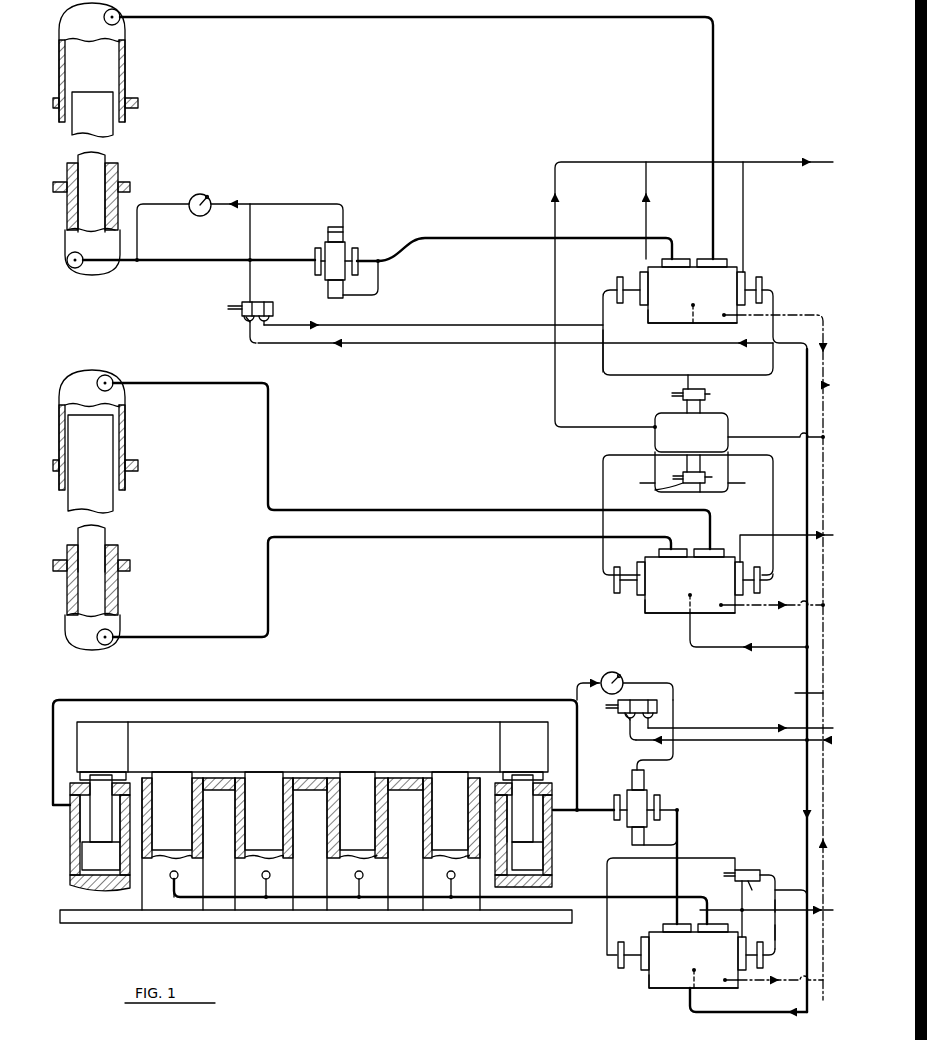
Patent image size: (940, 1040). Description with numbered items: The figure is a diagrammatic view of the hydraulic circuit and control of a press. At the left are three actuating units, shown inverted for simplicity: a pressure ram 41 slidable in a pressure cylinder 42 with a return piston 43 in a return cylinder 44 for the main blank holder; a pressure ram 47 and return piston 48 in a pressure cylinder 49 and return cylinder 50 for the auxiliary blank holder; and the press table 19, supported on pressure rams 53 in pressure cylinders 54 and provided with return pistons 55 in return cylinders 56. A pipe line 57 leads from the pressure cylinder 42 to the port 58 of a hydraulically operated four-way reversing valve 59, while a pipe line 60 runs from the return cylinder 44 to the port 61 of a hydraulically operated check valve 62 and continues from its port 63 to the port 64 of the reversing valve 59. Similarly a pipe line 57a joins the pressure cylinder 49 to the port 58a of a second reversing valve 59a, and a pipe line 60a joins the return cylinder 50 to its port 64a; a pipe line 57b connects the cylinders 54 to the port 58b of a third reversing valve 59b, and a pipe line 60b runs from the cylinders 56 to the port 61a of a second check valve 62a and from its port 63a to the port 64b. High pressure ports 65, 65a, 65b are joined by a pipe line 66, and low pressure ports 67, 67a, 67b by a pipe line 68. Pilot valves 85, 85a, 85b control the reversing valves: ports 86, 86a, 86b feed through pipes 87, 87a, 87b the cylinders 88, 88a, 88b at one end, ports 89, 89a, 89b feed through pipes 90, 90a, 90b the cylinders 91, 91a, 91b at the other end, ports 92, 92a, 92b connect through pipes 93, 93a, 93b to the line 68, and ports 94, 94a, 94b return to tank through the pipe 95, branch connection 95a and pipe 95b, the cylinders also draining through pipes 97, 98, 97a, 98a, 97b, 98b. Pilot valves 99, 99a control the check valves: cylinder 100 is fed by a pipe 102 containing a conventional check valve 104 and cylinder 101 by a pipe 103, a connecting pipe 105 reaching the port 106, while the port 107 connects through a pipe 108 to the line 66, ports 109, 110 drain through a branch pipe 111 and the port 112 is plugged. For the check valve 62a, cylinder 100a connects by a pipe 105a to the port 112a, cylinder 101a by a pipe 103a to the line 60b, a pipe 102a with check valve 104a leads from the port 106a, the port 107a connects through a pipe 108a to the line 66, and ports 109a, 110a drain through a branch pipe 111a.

The press table 19 is at (400, 752).
The pressure ram 41 is at (105, 125).
The pressure cylinder 42 is at (126, 80).
The return piston 43 is at (105, 175).
The return cylinder 44 is at (120, 197).
The pressure ram 47 is at (100, 462).
The return piston 48 is at (97, 538).
The pressure cylinder 49 is at (125, 420).
The return cylinder 50 is at (118, 590).
The pressure rams 53 is at (175, 830).
The pressure cylinders 54 is at (225, 876).
The return pistons 55 is at (312, 822).
The return cylinders 56 is at (72, 870).
The pipe line 57 is at (485, 17).
The pipe line 57a is at (428, 509).
The pipe line 57b is at (430, 900).
The port 58 is at (718, 257).
The port 58a is at (714, 548).
The port 58b is at (708, 923).
The four-way reversing valve 59 is at (650, 318).
The four-way reversing valve 59a is at (680, 608).
The four-way reversing valve 59b is at (672, 982).
The pipe line 60 is at (163, 262).
The pipe line 60a is at (484, 539).
The pipe line 60b is at (308, 699).
The port 61 is at (317, 276).
The port 61a is at (616, 800).
The check valve 62 is at (340, 248).
The check valve 62a is at (642, 800).
The port 63 is at (359, 268).
The port 63a is at (661, 805).
The port 64 is at (676, 257).
The port 64a is at (672, 548).
The port 64b is at (672, 923).
The high pressure port 65 is at (692, 303).
The high pressure port 65a is at (689, 593).
The high pressure port 65b is at (693, 968).
The pipe line 66 is at (805, 398).
The low pressure port 67 is at (724, 312).
The low pressure port 67a is at (721, 602).
The low pressure port 67b is at (725, 978).
The pipe line 68 is at (796, 314).
The pilot valve 85 is at (706, 392).
The pilot valve 85a is at (706, 478).
The pilot valve 85b is at (762, 870).
The port 86 is at (698, 388).
The port 86a is at (704, 472).
The port 86b is at (748, 869).
The pipe 87 is at (776, 291).
The pipe 87a is at (774, 504).
The pipe 87b is at (777, 886).
The cylinder 88 is at (747, 282).
The cylinder 88a is at (746, 570).
The cylinder 88b is at (764, 958).
The port 89 is at (680, 391).
The port 89a is at (680, 475).
The port 89b is at (733, 873).
The pipe 90 is at (603, 370).
The pipe 90a is at (603, 475).
The pipe 90b is at (607, 877).
The cylinder 91 is at (620, 297).
The cylinder 91a is at (624, 585).
The cylinder 91b is at (628, 962).
The port 92 is at (702, 402).
The port 92a is at (698, 485).
The port 92b is at (750, 885).
The pipe 93 is at (740, 437).
The pipe 93a is at (729, 486).
The pipe 93b is at (775, 905).
The port 94 is at (685, 401).
The port 94a is at (660, 489).
The port 94b is at (740, 884).
The pipe 95 is at (617, 425).
The branch connection 95a is at (654, 483).
The pipe 95b is at (776, 938).
The pipe 97 is at (745, 188).
The pipe 97a is at (742, 536).
The pipe 97b is at (743, 912).
The pipe 98 is at (640, 277).
The pipe 98a is at (640, 566).
The pipe 98b is at (642, 940).
The pilot valve 99 is at (256, 302).
The pilot valve 99a is at (622, 704).
The cylinder 100 is at (328, 234).
The cylinder 100a is at (633, 775).
The cylinder 101 is at (334, 298).
The cylinder 101a is at (632, 840).
The pipe 102 is at (318, 204).
The pipe 102a is at (572, 686).
The pipe 103 is at (373, 296).
The pipe 103a is at (668, 846).
The check valve 104 is at (196, 213).
The check valve 104a is at (600, 678).
The connecting pipe 105 is at (247, 235).
The pipe 105a is at (675, 708).
The port 106 is at (247, 302).
The port 106a is at (633, 700).
The port 107 is at (248, 326).
The port 107a is at (630, 724).
The pipe 108 is at (518, 346).
The pipe 108a is at (732, 741).
The port 109 is at (246, 318).
The port 109a is at (626, 716).
The port 110 is at (272, 320).
The port 110a is at (658, 712).
The branch pipe 111 is at (414, 330).
The branch pipe 111a is at (720, 727).
The port 112 is at (266, 302).
The port 112a is at (650, 700).